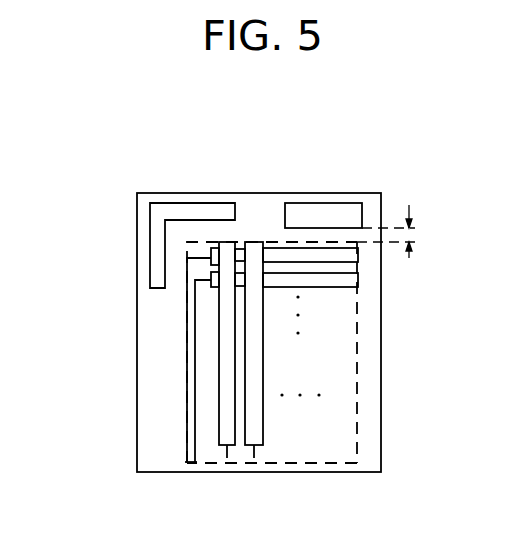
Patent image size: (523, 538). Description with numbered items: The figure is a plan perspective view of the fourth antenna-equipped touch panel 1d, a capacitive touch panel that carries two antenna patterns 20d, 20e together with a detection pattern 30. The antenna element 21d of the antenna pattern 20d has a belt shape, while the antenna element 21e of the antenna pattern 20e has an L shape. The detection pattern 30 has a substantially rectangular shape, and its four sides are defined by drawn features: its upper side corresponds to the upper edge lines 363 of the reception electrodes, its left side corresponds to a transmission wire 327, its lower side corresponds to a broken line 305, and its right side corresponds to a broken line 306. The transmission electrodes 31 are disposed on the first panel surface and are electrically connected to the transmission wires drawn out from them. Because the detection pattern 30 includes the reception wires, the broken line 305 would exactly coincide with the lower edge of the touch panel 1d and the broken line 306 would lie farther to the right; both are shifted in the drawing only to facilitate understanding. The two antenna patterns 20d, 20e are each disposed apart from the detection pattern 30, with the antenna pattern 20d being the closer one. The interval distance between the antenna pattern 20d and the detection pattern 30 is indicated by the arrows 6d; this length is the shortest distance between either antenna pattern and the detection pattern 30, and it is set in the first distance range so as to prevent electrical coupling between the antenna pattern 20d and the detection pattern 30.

The fourth antenna-equipped touch panel 1d is at (259, 177).
The antenna pattern 20e is at (129, 211).
The antenna element 21e is at (175, 213).
The antenna pattern 20d is at (371, 180).
The antenna element 21d is at (330, 212).
The arrows 6d is at (411, 236).
The detection pattern 30 is at (335, 383).
The transmission electrodes 31 is at (300, 257).
The broken line 305 is at (308, 463).
The broken line 306 is at (355, 437).
The transmission wire 327 is at (183, 418).
The upper edge lines 363 is at (255, 241).